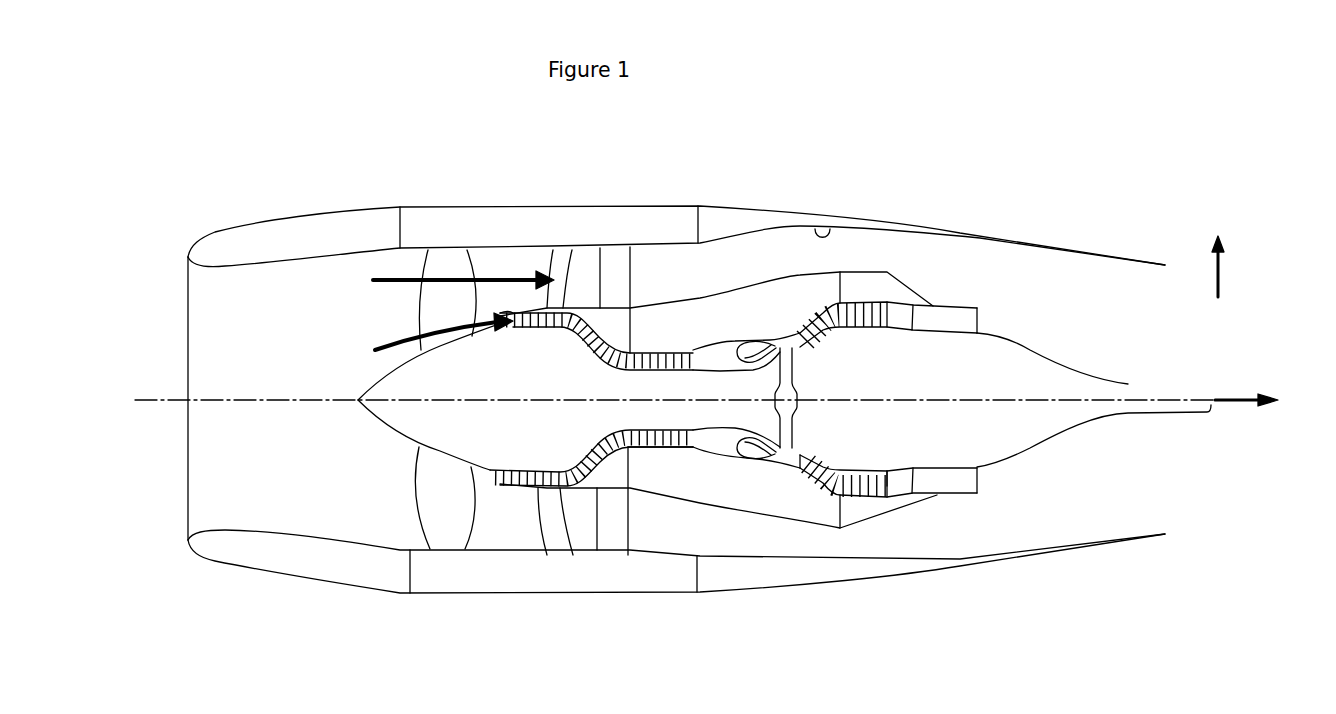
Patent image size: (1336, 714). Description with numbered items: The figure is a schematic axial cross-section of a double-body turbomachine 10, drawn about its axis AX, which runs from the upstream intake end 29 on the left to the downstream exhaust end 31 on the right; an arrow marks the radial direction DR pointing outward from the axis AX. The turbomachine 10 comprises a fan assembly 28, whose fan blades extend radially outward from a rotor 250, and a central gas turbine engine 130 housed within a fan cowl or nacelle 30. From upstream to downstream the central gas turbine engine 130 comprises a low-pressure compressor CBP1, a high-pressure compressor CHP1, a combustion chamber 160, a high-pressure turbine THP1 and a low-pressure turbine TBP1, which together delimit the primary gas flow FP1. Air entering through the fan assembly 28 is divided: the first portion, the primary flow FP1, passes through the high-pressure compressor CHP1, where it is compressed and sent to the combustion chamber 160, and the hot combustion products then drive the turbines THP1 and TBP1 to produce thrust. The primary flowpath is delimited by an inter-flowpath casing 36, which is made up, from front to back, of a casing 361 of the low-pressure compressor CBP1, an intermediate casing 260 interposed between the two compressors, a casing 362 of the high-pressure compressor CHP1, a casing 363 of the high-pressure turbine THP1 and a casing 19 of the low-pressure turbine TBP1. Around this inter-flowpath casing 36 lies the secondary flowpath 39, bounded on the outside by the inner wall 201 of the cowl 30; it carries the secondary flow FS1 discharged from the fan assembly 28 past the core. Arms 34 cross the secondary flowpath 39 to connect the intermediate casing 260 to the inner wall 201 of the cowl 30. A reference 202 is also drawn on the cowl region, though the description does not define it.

The turbomachine 10 is at (947, 480).
The casing of the low-pressure turbine 19 is at (873, 289).
The fan assembly 28 is at (455, 499).
The upstream intake end 29 is at (182, 462).
The fan cowl 30 is at (420, 207).
The downstream exhaust end 31 is at (1115, 336).
The arms 34 is at (624, 289).
The inter-flowpath casing 36 is at (739, 324).
The secondary flowpath 39 is at (739, 277).
The central gas turbine engine 130 is at (930, 283).
The combustion chamber 160 is at (752, 451).
The inner wall of the fan cowl 201 is at (829, 234).
The core engine 202 is at (643, 303).
The rotor 250 is at (553, 382).
The intermediate casing 260 is at (612, 323).
The casing of the low-pressure compressor 361 is at (575, 486).
The casing of the high-pressure compressor 362 is at (665, 332).
The casing of the high-pressure turbine 363 is at (811, 298).
The axis AX is at (153, 397).
The radial direction DR is at (1221, 271).
The secondary flow FS1 is at (387, 277).
The primary gas flow FP1 is at (391, 339).
The low-pressure compressor CBP1 is at (525, 482).
The high-pressure compressor CHP1 is at (690, 488).
The high-pressure turbine THP1 is at (808, 468).
The low-pressure turbine TBP1 is at (884, 497).